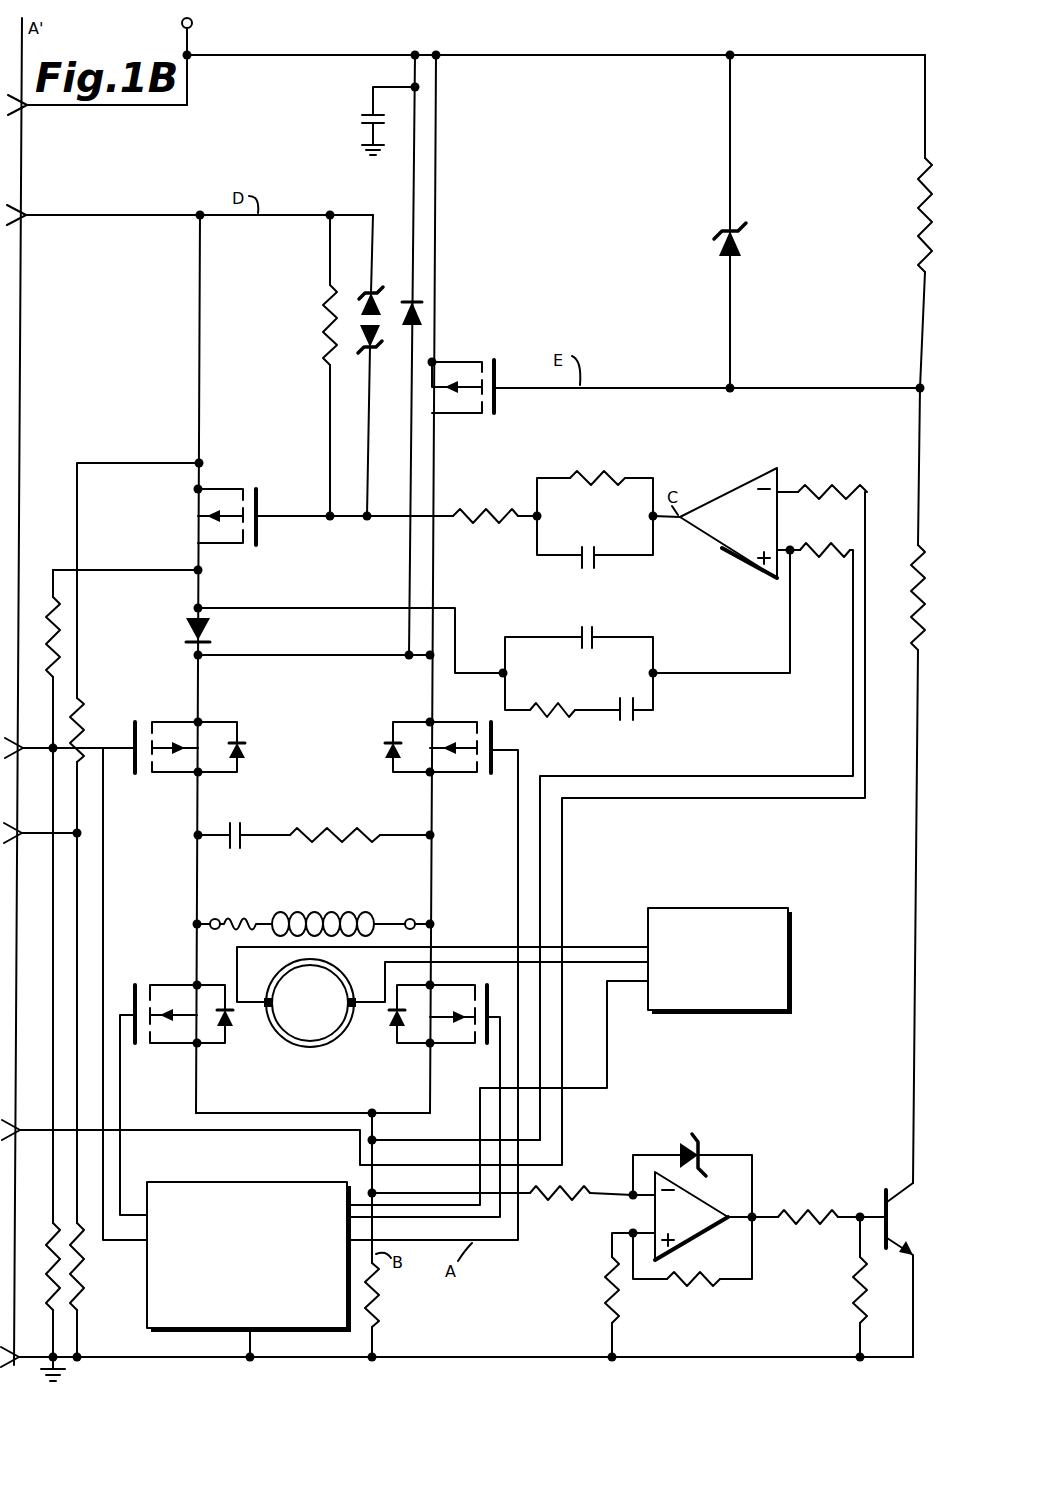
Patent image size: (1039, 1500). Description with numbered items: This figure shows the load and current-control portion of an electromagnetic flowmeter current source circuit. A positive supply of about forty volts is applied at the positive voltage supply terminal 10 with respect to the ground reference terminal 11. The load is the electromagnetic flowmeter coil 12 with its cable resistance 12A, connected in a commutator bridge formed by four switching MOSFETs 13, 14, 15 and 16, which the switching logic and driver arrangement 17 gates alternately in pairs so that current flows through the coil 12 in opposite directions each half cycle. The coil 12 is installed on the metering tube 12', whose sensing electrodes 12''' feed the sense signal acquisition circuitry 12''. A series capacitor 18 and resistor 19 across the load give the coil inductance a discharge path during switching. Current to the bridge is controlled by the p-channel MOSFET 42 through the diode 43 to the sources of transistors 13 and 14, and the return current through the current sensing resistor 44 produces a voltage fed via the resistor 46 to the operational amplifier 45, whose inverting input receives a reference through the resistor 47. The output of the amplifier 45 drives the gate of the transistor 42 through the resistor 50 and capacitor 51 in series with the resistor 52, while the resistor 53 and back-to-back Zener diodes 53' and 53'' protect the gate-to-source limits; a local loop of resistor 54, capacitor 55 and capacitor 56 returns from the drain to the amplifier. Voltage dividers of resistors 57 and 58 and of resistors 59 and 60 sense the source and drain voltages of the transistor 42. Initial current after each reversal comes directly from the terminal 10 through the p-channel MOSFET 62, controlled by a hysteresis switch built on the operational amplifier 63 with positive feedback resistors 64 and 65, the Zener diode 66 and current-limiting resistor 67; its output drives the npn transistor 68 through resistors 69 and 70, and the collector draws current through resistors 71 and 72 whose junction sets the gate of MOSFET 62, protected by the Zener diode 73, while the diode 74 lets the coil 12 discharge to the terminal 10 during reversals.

The positive voltage supply terminal 10 is at (182, 24).
The ground reference terminal 11 is at (46, 1382).
The electromagnetic flowmeter coil 12 is at (351, 909).
The cable resistance 12A is at (233, 923).
The metering tube 12' is at (442, 977).
The sense signal acquisition circuitry 12'' is at (720, 944).
The sensing electrodes 12''' is at (310, 1003).
The switching MOSFET 13 is at (176, 813).
The switching MOSFET 14 is at (470, 815).
The switching MOSFET 15 is at (164, 1074).
The switching MOSFET 16 is at (477, 1074).
The commutator current direction switching logic and switching transistor driver arr 17 is at (253, 1182).
The capacitor 18 is at (243, 800).
The resistor 19 is at (345, 828).
The p-channel MOSFET 42 is at (183, 525).
The diode 43 is at (212, 636).
The current sensing resistor 44 is at (380, 1297).
The operational amplifier 45 is at (745, 485).
The resistor 46 is at (825, 559).
The resistor 47 is at (840, 475).
The resistor 50 is at (608, 466).
The capacitor 51 is at (596, 575).
The resistor 52 is at (500, 509).
The resistor 53 is at (306, 365).
The Zener diode 53' is at (382, 265).
The Zener diode 53'' is at (384, 420).
The resistor 54 is at (568, 722).
The capacitor 55 is at (622, 722).
The capacitor 56 is at (589, 621).
The resistor 57 is at (86, 716).
The resistor 58 is at (83, 1256).
The resistor 59 is at (40, 632).
The resistor 60 is at (47, 1256).
The p-channel MOSFET 62 is at (446, 400).
The operational amplifier 63 is at (726, 1199).
The resistor 64 is at (692, 1270).
The resistor 65 is at (605, 1287).
The Zener diode 66 is at (690, 1115).
The resistor 67 is at (576, 1203).
The npn bipolar transistor 68 is at (922, 1236).
The resistor 69 is at (818, 1210).
The resistor 70 is at (847, 1287).
The resistor 71 is at (912, 212).
The resistor 72 is at (912, 582).
The Zener diode 73 is at (712, 249).
The diode 74 is at (421, 311).